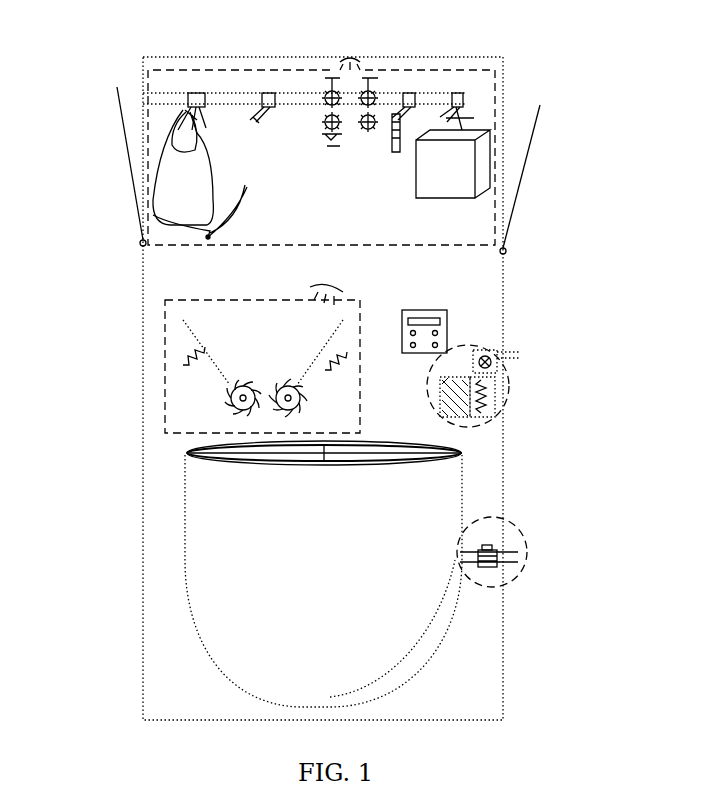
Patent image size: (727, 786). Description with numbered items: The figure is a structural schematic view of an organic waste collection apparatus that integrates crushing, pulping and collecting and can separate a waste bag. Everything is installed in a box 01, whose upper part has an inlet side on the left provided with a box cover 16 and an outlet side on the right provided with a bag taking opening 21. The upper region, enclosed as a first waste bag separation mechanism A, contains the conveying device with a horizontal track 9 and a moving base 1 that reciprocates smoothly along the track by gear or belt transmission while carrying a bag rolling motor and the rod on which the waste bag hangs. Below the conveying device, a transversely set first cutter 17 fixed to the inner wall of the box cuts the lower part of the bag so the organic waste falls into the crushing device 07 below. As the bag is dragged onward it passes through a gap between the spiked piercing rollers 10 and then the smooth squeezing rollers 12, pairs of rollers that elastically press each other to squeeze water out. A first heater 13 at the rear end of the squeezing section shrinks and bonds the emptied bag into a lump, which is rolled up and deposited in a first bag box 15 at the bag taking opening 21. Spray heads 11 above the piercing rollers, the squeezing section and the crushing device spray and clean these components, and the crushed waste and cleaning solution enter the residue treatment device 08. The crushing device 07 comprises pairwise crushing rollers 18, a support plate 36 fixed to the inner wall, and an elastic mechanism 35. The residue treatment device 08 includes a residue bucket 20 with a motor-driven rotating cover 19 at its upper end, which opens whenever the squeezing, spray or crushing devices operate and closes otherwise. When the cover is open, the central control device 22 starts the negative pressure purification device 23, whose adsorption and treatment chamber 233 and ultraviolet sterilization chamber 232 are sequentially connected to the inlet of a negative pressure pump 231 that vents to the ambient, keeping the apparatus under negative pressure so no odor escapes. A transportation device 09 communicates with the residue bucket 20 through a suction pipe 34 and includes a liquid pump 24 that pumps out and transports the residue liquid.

The box 01 is at (143, 635).
The first waste bag separation mechanism A is at (493, 208).
The crushing device 07 is at (141, 246).
The bag taking opening 21 is at (527, 160).
The moving base 1 is at (192, 95).
The horizontal track 9 is at (245, 93).
The piercing rollers 10 is at (328, 93).
The spray head 11 is at (348, 60).
The squeezing rollers 12 is at (378, 97).
The first heater 13 is at (408, 97).
The first bag box 15 is at (473, 128).
The box cover 16 is at (137, 207).
The first cutter 17 is at (160, 218).
The support plate 36 is at (183, 357).
The elastic mechanism 35 is at (232, 395).
The crushing rollers 18 is at (218, 397).
The rotating cover 19 is at (200, 447).
The residue bucket 20 is at (212, 578).
The suction pipe 34 is at (428, 632).
The residue treatment device 08 is at (368, 650).
The central control device 22 is at (447, 310).
The negative pressure purification device 23 is at (508, 402).
The negative pressure pump 231 is at (487, 350).
The ultraviolet sterilization chamber 232 is at (490, 380).
The adsorption and treatment chamber 233 is at (462, 417).
The liquid pump 24 is at (495, 548).
The transportation device 09 is at (530, 548).